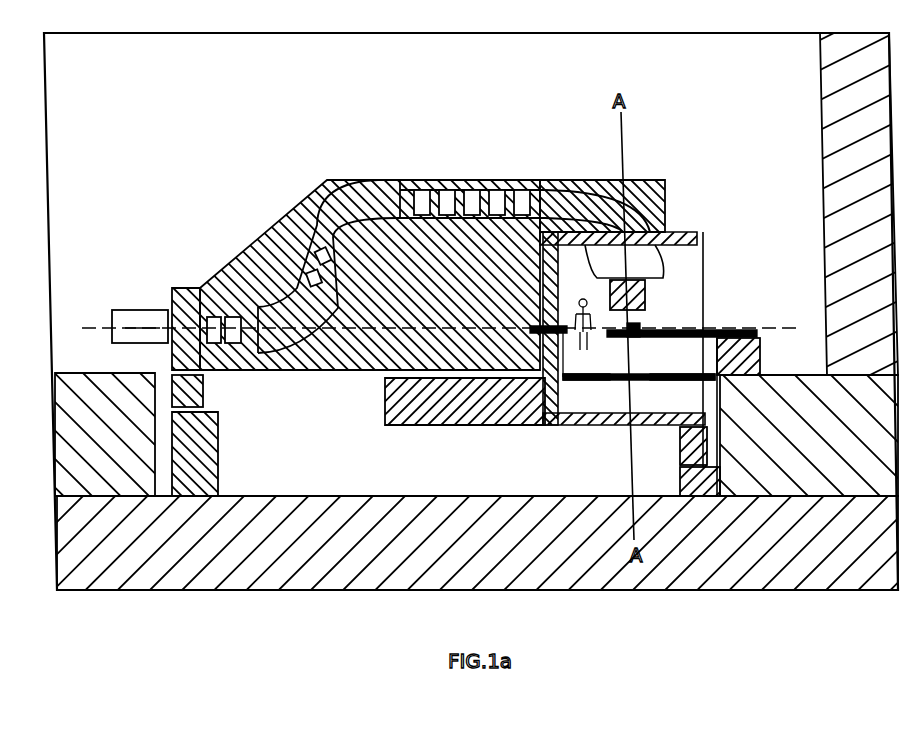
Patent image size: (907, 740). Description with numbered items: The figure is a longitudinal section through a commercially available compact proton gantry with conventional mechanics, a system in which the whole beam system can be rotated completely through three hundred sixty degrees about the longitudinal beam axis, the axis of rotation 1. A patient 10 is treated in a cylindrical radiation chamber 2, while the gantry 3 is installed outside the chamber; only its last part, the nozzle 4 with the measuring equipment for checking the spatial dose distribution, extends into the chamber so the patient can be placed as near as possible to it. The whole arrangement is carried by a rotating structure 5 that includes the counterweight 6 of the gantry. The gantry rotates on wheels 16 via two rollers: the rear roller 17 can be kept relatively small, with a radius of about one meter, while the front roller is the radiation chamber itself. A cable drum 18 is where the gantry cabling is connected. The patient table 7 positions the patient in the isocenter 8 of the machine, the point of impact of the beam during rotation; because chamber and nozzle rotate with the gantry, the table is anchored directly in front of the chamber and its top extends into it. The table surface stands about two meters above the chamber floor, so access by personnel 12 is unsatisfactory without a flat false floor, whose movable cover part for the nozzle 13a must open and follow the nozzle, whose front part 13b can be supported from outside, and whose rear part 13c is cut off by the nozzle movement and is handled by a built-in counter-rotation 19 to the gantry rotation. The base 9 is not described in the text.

The axis of rotation 1 is at (439, 327).
The radiation chamber 2 is at (682, 232).
The gantry 3 is at (571, 208).
The nozzle 4 is at (643, 283).
The rotating structure 5 is at (462, 188).
The counterweight 6 is at (647, 180).
The patient table 7 is at (750, 338).
The isocenter 8 is at (642, 338).
The base plate 9 is at (308, 494).
The patient 10 is at (667, 323).
The personnel 12 is at (542, 313).
The movable part of the cover for the nozzle 13a is at (618, 381).
The front part of the floor 13b is at (673, 381).
The rear part of the floor 13c is at (575, 381).
The wheels 16 is at (197, 393).
The rear roller 17 is at (185, 302).
The cable drum 18 is at (140, 322).
The counter-rotation 19 is at (537, 328).